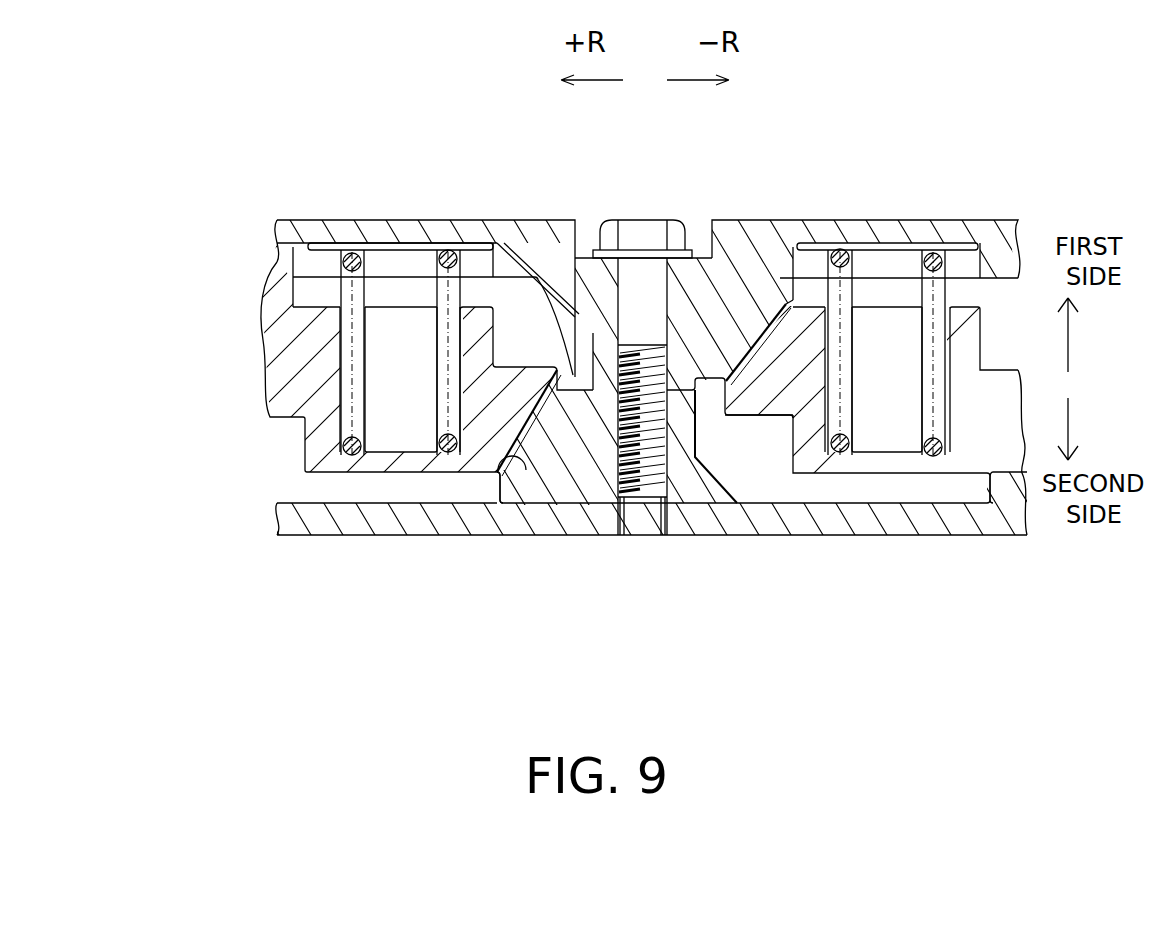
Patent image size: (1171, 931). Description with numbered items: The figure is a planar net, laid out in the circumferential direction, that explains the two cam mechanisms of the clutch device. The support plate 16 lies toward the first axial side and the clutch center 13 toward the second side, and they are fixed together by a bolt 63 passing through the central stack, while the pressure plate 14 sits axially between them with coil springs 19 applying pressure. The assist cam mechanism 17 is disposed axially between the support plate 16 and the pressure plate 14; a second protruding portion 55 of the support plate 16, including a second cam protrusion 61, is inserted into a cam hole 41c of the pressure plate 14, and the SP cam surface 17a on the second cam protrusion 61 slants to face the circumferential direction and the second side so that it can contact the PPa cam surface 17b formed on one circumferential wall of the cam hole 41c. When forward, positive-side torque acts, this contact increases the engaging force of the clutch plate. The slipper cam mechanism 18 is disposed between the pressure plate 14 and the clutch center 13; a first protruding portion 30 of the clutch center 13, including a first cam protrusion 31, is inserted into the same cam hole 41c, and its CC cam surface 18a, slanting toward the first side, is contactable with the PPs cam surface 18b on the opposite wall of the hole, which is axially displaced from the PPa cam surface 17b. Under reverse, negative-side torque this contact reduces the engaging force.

The clutch center 13 is at (294, 560).
The pressure plate 14 is at (257, 423).
The support plate 16 is at (273, 196).
The assist cam mechanism 17 is at (805, 283).
The SP cam surface 17a is at (778, 340).
The PPa cam surface 17b is at (745, 355).
The slipper cam mechanism 18 is at (470, 472).
The CC cam surface 18a is at (494, 496).
The PPs cam surface 18b is at (548, 470).
The coil spring 19 is at (343, 258).
The first protruding portion 30 is at (578, 385).
The first cam protrusion 31 is at (586, 376).
The cam hole 41c is at (447, 452).
The second protruding portion 55 is at (711, 404).
The second cam protrusion 61 is at (750, 402).
The bolt 63 is at (646, 238).